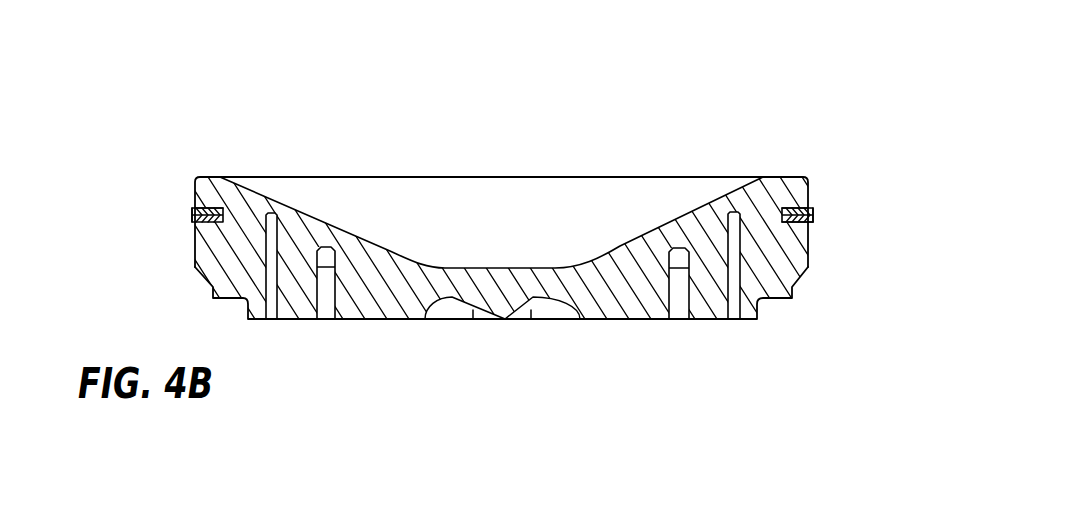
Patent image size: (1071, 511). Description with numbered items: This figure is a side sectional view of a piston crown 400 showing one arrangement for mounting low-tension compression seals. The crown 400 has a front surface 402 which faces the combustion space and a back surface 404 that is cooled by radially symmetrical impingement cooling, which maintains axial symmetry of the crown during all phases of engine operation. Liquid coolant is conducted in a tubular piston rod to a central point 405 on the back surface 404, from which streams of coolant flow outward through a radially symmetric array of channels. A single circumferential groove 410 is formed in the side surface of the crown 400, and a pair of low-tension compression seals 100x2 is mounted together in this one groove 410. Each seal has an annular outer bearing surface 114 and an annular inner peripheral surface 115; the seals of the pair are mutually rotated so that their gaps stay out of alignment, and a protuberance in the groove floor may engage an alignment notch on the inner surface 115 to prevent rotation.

The crown 400 is at (517, 171).
The front surface 402 is at (428, 200).
The back surface 404 is at (382, 325).
The central point 405 is at (505, 320).
The circumferential groove 410 is at (795, 206).
The bearing surface 114 is at (190, 207).
The inner peripheral surface 115 is at (222, 207).
The pair of low-tension compression seals 100x2 is at (190, 221).